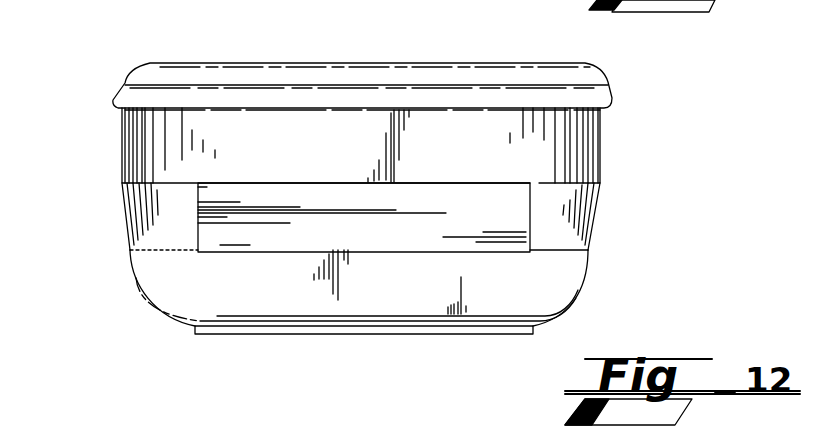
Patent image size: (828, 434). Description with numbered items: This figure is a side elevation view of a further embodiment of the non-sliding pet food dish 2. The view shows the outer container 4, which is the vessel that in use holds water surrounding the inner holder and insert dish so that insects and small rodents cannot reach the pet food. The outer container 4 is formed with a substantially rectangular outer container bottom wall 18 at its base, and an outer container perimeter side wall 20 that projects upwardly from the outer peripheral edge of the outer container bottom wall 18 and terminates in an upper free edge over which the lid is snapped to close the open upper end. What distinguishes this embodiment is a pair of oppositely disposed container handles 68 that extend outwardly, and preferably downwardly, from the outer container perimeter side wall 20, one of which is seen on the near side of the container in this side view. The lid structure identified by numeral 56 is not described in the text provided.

The non-sliding pet food dish 2 is at (80, 200).
The outer container 4 is at (602, 137).
The outer container bottom wall 18 is at (364, 330).
The outer container perimeter side wall 20 is at (160, 150).
The lid 56 is at (438, 62).
The container handles 68 is at (228, 233).